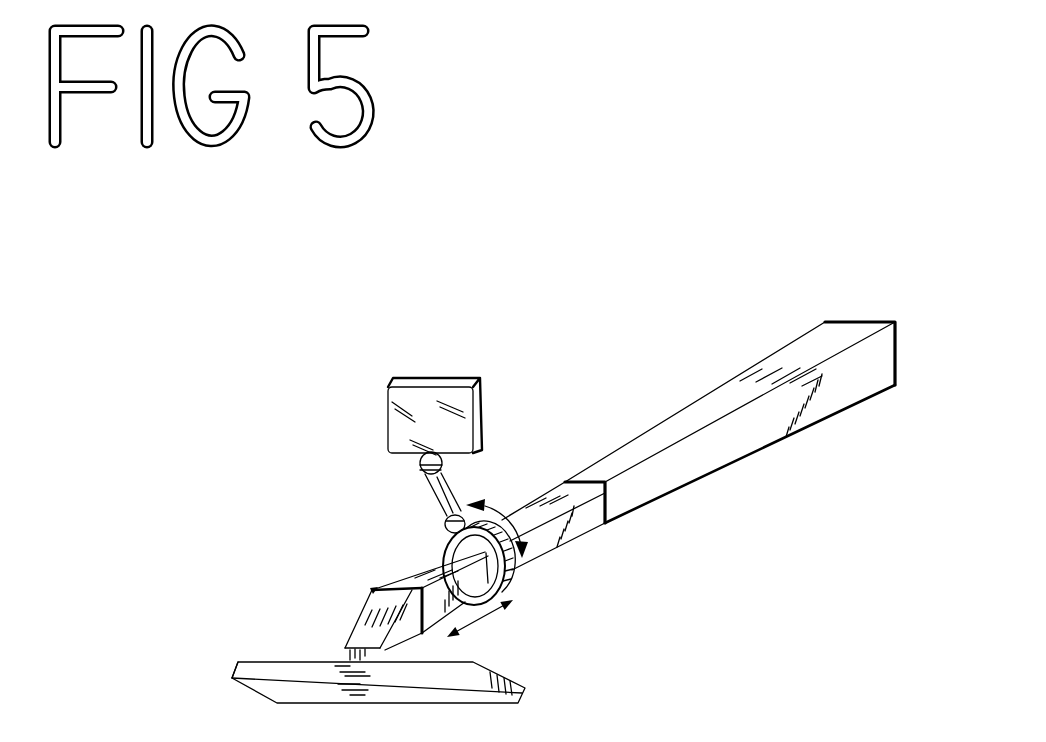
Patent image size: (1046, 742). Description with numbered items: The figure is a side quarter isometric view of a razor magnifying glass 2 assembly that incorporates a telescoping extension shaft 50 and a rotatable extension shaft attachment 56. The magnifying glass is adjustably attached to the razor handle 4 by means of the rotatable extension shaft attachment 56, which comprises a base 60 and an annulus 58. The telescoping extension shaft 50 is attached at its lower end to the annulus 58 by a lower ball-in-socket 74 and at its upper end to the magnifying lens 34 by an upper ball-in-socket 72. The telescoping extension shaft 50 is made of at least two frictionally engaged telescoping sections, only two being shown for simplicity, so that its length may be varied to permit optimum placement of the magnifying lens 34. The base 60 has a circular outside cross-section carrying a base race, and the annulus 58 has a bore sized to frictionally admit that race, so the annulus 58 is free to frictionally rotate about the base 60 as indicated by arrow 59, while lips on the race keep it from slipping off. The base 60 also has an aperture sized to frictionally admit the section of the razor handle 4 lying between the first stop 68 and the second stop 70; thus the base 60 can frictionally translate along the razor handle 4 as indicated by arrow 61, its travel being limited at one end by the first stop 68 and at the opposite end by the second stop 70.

The support apparatus 2 is at (760, 288).
The razor handle 4 is at (840, 388).
The magnifying lens 34 is at (440, 378).
The telescoping extension shaft 50 is at (478, 503).
The rotatable extension shaft attachment 56 is at (507, 590).
The annulus 58 is at (514, 568).
The arrow 59 is at (503, 502).
The base 60 is at (445, 546).
The arrow 61 is at (505, 630).
The first stop 68 is at (372, 590).
The second stop 70 is at (607, 505).
The upper ball-in-socket 72 is at (420, 466).
The lower ball-in-socket 74 is at (446, 525).